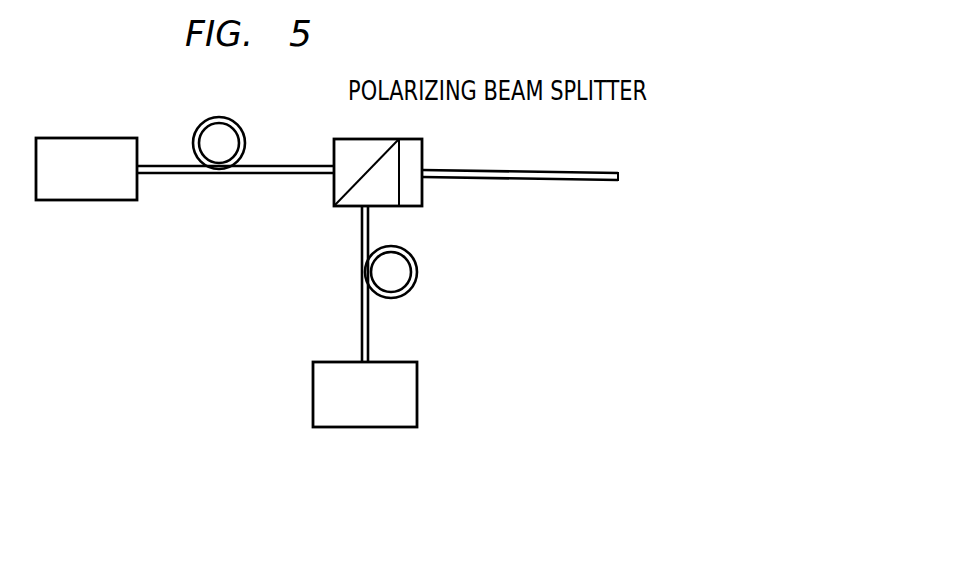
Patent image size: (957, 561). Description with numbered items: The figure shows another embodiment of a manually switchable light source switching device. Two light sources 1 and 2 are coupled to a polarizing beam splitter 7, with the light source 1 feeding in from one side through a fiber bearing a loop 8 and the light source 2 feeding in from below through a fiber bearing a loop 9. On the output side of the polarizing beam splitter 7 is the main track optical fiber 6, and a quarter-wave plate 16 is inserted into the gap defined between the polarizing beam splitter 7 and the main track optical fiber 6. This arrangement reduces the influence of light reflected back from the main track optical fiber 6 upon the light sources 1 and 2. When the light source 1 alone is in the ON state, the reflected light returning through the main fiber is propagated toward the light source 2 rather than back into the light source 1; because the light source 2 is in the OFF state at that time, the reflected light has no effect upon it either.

The light source 1 is at (120, 138).
The light source 2 is at (420, 373).
The main track optical fiber 6 is at (545, 170).
The polarizing beam splitter 7 is at (374, 139).
The fiber loop 8 is at (237, 122).
The fiber loop 9 is at (418, 257).
The quarter-wave plate 16 is at (415, 152).